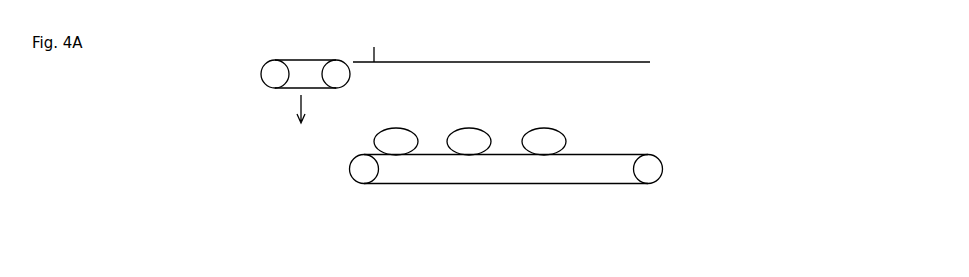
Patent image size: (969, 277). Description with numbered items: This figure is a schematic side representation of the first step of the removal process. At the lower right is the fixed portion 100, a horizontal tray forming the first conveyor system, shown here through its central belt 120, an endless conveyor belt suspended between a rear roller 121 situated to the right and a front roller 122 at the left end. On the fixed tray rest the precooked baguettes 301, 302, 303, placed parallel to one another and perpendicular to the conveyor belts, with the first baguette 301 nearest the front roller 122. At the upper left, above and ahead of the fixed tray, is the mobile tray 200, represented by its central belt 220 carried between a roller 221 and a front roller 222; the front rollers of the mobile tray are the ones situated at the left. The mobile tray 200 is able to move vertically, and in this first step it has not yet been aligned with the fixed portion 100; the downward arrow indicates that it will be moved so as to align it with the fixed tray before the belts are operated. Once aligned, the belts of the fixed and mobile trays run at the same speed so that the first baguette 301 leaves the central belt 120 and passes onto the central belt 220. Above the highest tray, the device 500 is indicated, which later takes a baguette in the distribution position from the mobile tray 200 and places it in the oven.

The fixed portion 100 is at (545, 182).
The central belt 120 is at (600, 154).
The rear roller 121 is at (647, 171).
The front roller 122 is at (364, 171).
The mobile tray 200 is at (300, 77).
The central belt 220 is at (289, 60).
The roller 221 is at (333, 78).
The front roller 222 is at (275, 74).
The first baguette 301 is at (398, 142).
The precooked baguette 302 is at (466, 142).
The precooked baguette 303 is at (541, 143).
The device for placing items into the oven 500 is at (560, 62).